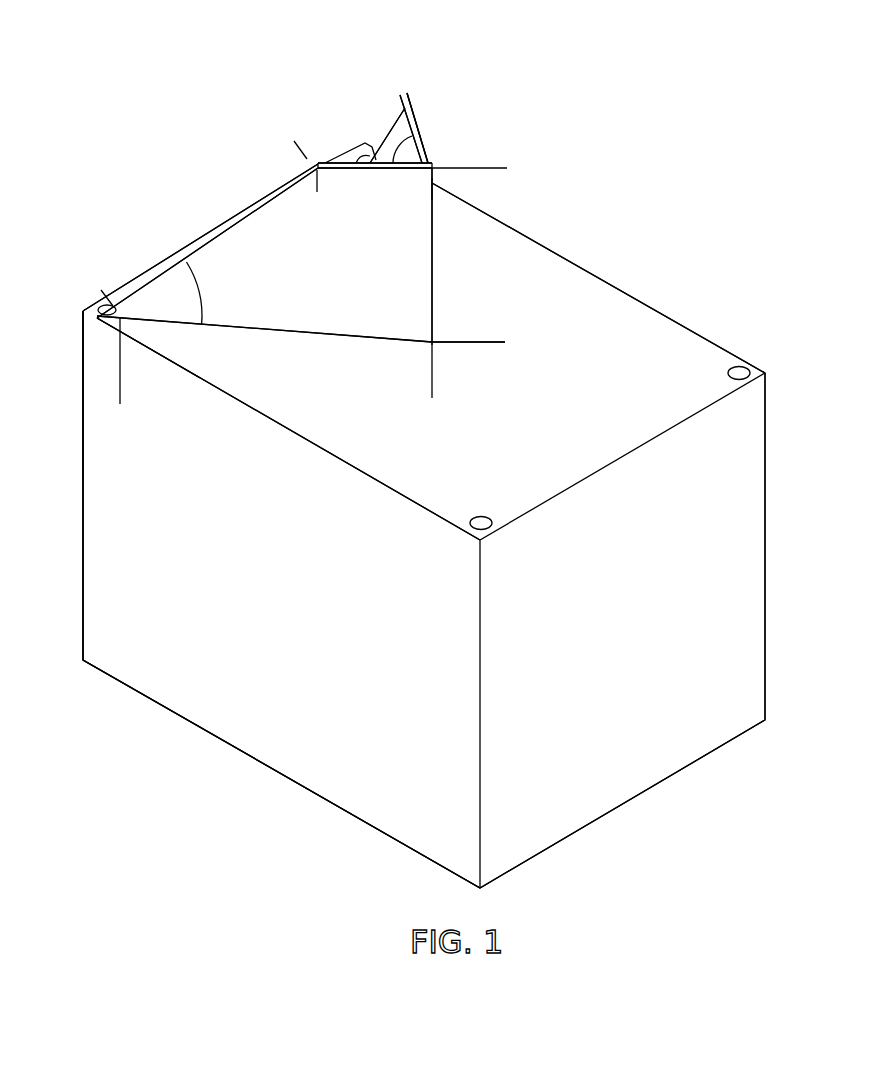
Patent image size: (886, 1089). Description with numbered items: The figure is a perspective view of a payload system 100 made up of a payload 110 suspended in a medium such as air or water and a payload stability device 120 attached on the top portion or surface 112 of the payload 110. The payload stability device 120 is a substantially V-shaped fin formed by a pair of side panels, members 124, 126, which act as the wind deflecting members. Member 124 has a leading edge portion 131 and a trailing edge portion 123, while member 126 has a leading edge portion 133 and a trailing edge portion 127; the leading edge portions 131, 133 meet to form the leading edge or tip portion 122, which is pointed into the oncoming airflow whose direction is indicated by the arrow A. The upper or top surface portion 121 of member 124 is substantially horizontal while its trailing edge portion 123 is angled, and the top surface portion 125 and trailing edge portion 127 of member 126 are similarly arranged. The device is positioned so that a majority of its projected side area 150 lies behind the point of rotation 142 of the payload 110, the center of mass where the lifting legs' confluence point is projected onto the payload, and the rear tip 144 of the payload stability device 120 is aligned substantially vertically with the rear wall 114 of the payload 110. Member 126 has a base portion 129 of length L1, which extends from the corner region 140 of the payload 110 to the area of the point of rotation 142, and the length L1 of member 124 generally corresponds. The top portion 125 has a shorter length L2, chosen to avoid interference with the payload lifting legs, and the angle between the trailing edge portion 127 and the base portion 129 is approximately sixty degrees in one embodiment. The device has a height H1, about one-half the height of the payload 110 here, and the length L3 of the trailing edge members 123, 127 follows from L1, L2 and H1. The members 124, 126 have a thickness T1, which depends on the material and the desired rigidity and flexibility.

The payload system 100 is at (637, 52).
The payload 110 is at (763, 558).
The top portion or surface of the payload 112 is at (368, 457).
The rear wall of the payload 114 is at (83, 618).
The payload stability device 120 is at (435, 91).
The upper or top surface portion of member 124 121 is at (418, 122).
The leading edge or tip portion 122 is at (433, 302).
The trailing edge portion of member 124 123 is at (395, 123).
The side panel member 124 is at (432, 195).
The upper or top surface portion of member 126 125 is at (330, 162).
The side panel member 126 is at (284, 322).
The trailing edge portion of member 126 127 is at (158, 280).
The base portion 129 is at (333, 337).
The leading edge portion of member 124 131 is at (432, 183).
The leading edge portion of member 126 133 is at (432, 230).
The corner region of the payload 140 is at (110, 333).
The point of rotation 142 is at (438, 350).
The rear tip of the payload stability device 144 is at (83, 337).
The projected side area 150 is at (243, 725).
The arrow indicating airflow direction A is at (497, 352).
The thickness T1 is at (380, 115).
The length of member L1 is at (432, 397).
The length of top portion L2 is at (432, 183).
The length of trailing edge members L3 is at (298, 152).
The height H1 is at (497, 168).